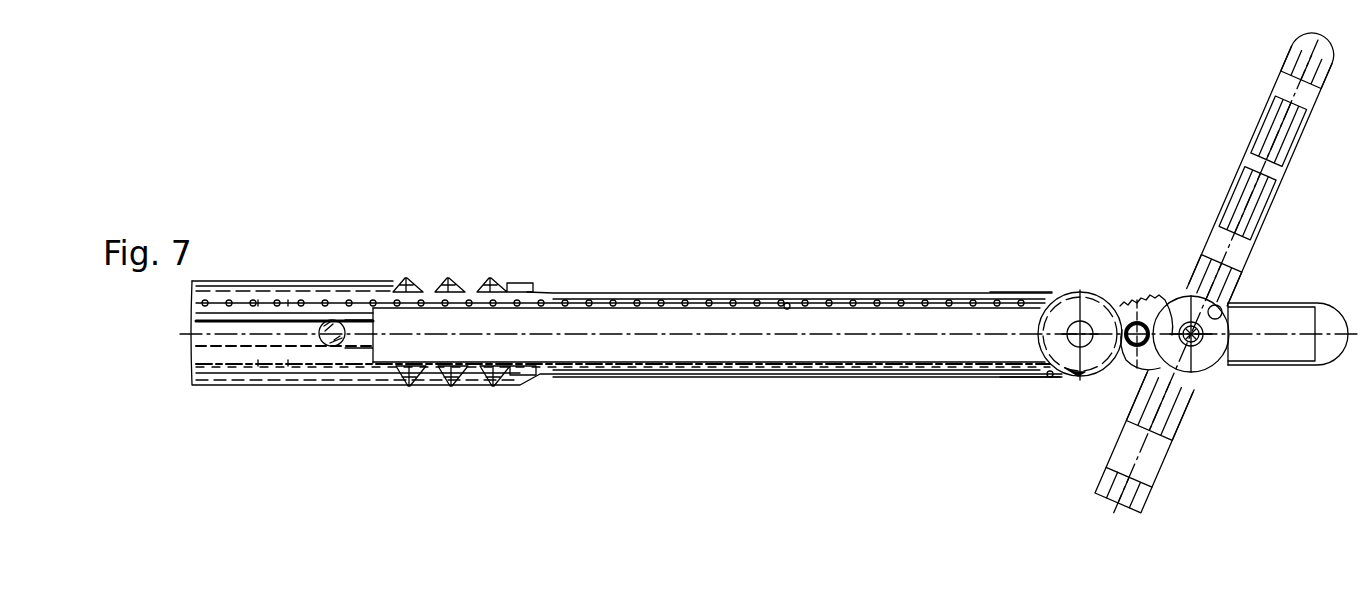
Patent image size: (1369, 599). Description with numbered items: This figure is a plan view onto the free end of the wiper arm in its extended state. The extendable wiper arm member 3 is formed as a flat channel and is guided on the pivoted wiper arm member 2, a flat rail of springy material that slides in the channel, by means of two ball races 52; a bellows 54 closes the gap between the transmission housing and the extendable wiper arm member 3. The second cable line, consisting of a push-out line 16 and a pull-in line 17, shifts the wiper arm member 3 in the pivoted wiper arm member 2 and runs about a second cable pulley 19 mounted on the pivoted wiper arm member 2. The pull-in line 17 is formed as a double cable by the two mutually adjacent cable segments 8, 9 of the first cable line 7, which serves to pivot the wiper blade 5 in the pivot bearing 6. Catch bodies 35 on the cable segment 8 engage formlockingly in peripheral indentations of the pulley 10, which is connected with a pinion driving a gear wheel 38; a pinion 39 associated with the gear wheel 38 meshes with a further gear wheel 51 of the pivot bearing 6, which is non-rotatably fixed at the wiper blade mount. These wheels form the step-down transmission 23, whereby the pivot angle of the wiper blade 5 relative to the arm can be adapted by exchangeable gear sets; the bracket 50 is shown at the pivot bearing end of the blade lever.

The pivoted wiper arm member 2 is at (357, 338).
The extendable wiper arm member 3 is at (807, 338).
The wiper blade 5 is at (1233, 247).
The pivot bearing 6 is at (1197, 343).
The first cable line 7 is at (840, 370).
The cable segment 8 is at (995, 302).
The cable segment 9 is at (548, 366).
The pulley 10 is at (1072, 307).
The push-out line 16 is at (192, 325).
The pull-in line 17 is at (742, 365).
The second cable pulley 19 is at (325, 343).
The step-down transmission 23 is at (1105, 385).
The catch bodies 35 is at (787, 303).
The gear wheel 38 is at (1128, 307).
The pinion 39 is at (1178, 408).
The bracket 50 is at (1237, 297).
The gear wheel 51 is at (1180, 308).
The ball races 52 is at (287, 307).
The bellows 54 is at (440, 367).